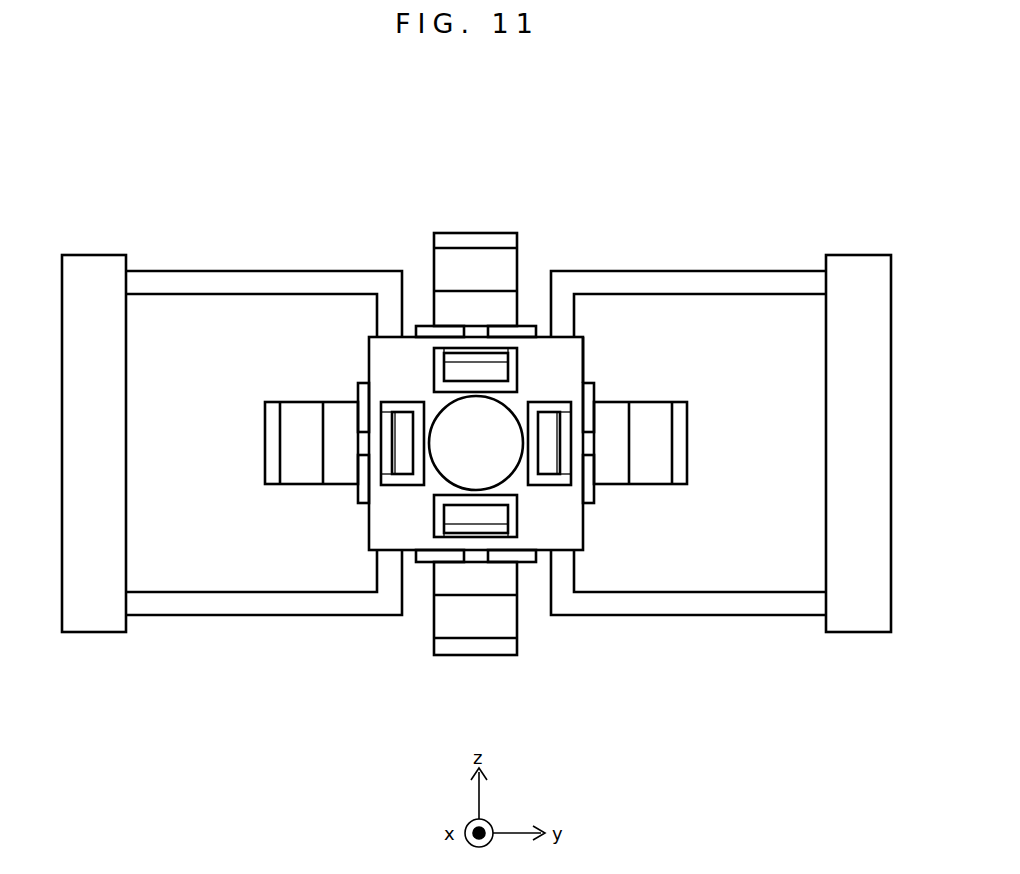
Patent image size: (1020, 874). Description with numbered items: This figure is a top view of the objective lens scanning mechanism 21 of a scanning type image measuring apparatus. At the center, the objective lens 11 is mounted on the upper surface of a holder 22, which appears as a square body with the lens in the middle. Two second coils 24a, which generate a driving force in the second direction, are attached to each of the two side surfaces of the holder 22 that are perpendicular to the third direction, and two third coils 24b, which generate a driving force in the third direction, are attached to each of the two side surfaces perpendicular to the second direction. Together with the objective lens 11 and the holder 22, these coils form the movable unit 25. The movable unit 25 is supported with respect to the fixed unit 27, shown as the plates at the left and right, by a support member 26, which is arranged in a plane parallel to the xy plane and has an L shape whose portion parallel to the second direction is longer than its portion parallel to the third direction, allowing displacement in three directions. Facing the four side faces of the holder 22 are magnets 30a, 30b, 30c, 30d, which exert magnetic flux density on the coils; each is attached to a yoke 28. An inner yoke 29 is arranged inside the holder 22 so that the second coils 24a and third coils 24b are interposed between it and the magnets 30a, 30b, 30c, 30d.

The objective lens 11 is at (508, 427).
The objective lens scanning mechanism 21 is at (682, 178).
The holder 22 is at (584, 352).
The second coils 24a is at (427, 322).
The third coils 24b is at (358, 393).
The movable unit 25 is at (595, 368).
The support member 26 is at (240, 270).
The fixed unit 27 is at (126, 440).
The yoke 28 is at (458, 238).
The inner yoke 29 is at (460, 370).
The magnet 30a is at (480, 625).
The magnet 30b is at (660, 443).
The magnet 30c is at (482, 260).
The magnet 30d is at (290, 443).